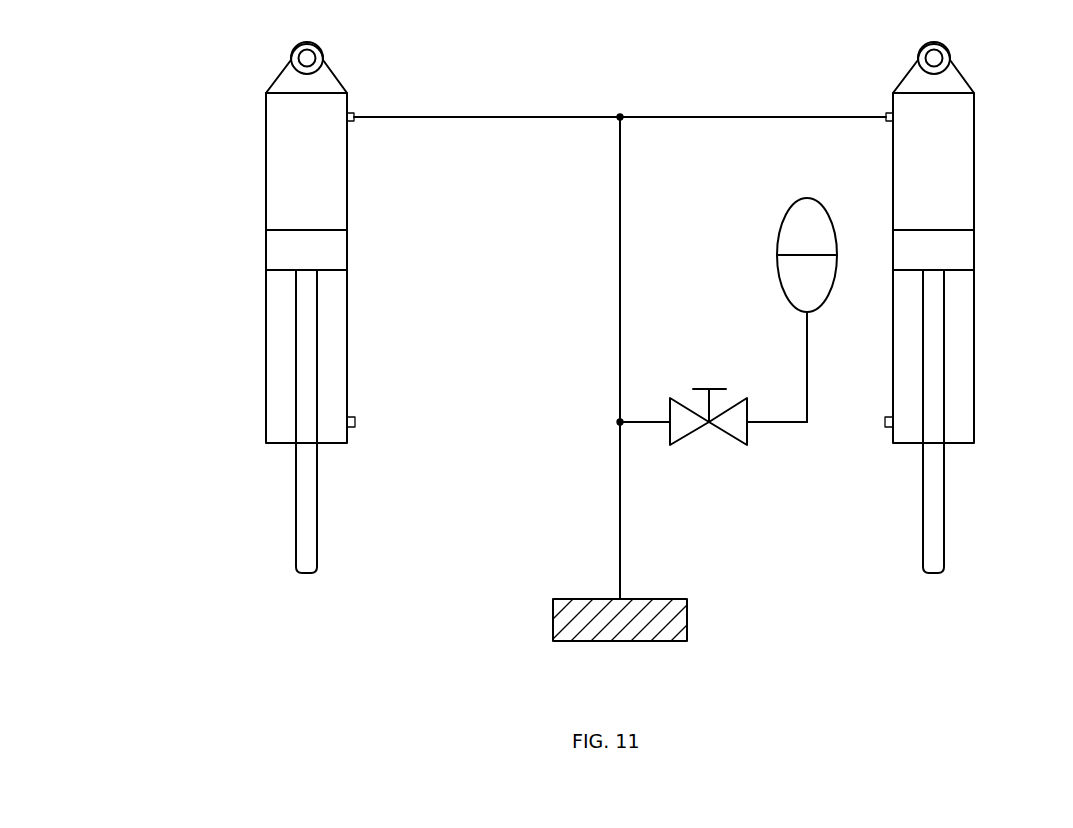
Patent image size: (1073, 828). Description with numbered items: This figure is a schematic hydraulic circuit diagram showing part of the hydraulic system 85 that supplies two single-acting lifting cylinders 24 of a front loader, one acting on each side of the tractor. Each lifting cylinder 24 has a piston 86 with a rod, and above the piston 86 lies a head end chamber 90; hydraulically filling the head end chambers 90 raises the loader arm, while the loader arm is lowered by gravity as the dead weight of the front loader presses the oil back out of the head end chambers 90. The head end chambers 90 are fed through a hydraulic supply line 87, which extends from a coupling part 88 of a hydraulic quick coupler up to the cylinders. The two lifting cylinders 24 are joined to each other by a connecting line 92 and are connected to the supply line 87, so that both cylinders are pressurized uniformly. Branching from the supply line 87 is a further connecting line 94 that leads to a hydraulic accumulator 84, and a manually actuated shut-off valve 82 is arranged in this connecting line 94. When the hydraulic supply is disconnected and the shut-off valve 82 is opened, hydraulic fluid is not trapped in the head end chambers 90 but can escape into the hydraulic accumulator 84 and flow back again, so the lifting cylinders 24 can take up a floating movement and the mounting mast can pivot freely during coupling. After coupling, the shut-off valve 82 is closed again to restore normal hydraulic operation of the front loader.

The lifting cylinder 24 is at (288, 203).
The head end chamber 90 is at (303, 109).
The piston 86 is at (288, 251).
The connecting line 92 is at (677, 113).
The hydraulic system 85 is at (462, 589).
The hydraulic supply line 87 is at (620, 540).
The coupling part 88 is at (663, 623).
The shut-off valve 82 is at (730, 437).
The connecting line 94 is at (807, 401).
The hydraulic accumulator 84 is at (782, 222).